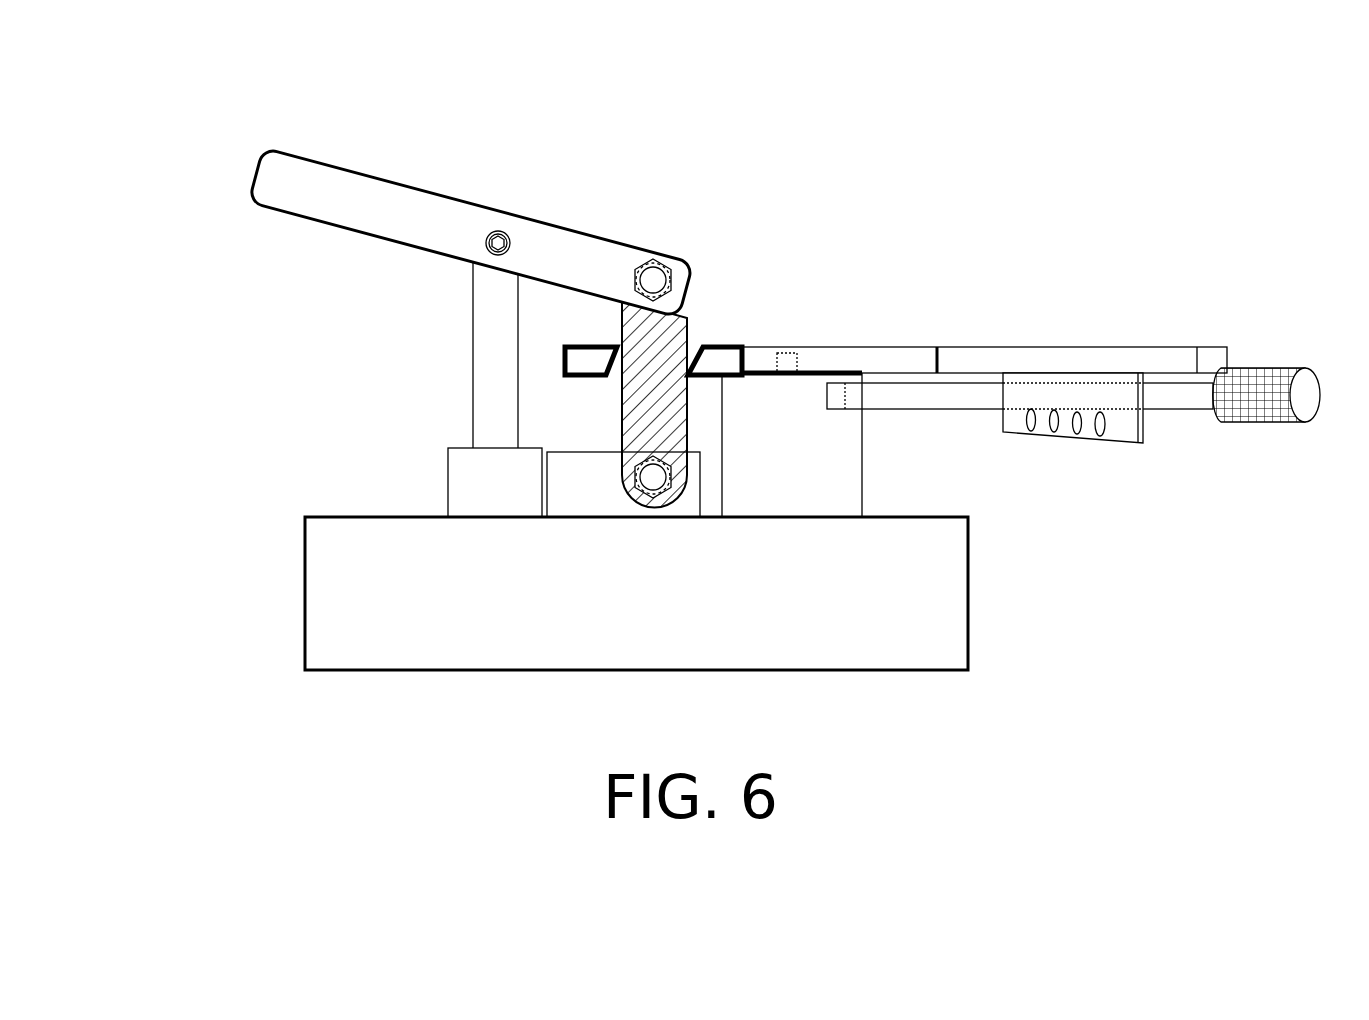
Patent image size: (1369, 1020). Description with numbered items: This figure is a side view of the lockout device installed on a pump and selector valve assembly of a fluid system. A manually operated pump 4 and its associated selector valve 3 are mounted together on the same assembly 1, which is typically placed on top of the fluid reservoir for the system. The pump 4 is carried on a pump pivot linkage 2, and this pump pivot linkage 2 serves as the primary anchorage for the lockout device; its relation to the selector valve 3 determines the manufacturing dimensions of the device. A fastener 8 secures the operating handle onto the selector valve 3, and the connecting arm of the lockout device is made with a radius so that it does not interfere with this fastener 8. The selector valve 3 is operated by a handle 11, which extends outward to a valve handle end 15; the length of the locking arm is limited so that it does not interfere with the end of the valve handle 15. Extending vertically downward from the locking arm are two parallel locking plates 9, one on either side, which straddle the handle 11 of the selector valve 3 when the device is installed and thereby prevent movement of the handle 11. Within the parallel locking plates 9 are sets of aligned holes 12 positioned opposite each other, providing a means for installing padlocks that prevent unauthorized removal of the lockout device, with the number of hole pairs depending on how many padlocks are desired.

The assembly 1 is at (297, 631).
The pump pivot linkage 2 is at (653, 383).
The selector valve 3 is at (795, 398).
The manually operated pump 4 is at (280, 168).
The fastener 8 is at (784, 371).
The parallel locking plates 9 is at (1017, 424).
The handle 11 is at (1185, 400).
The aligned holes 12 is at (1105, 434).
The valve handle end 15 is at (1280, 355).